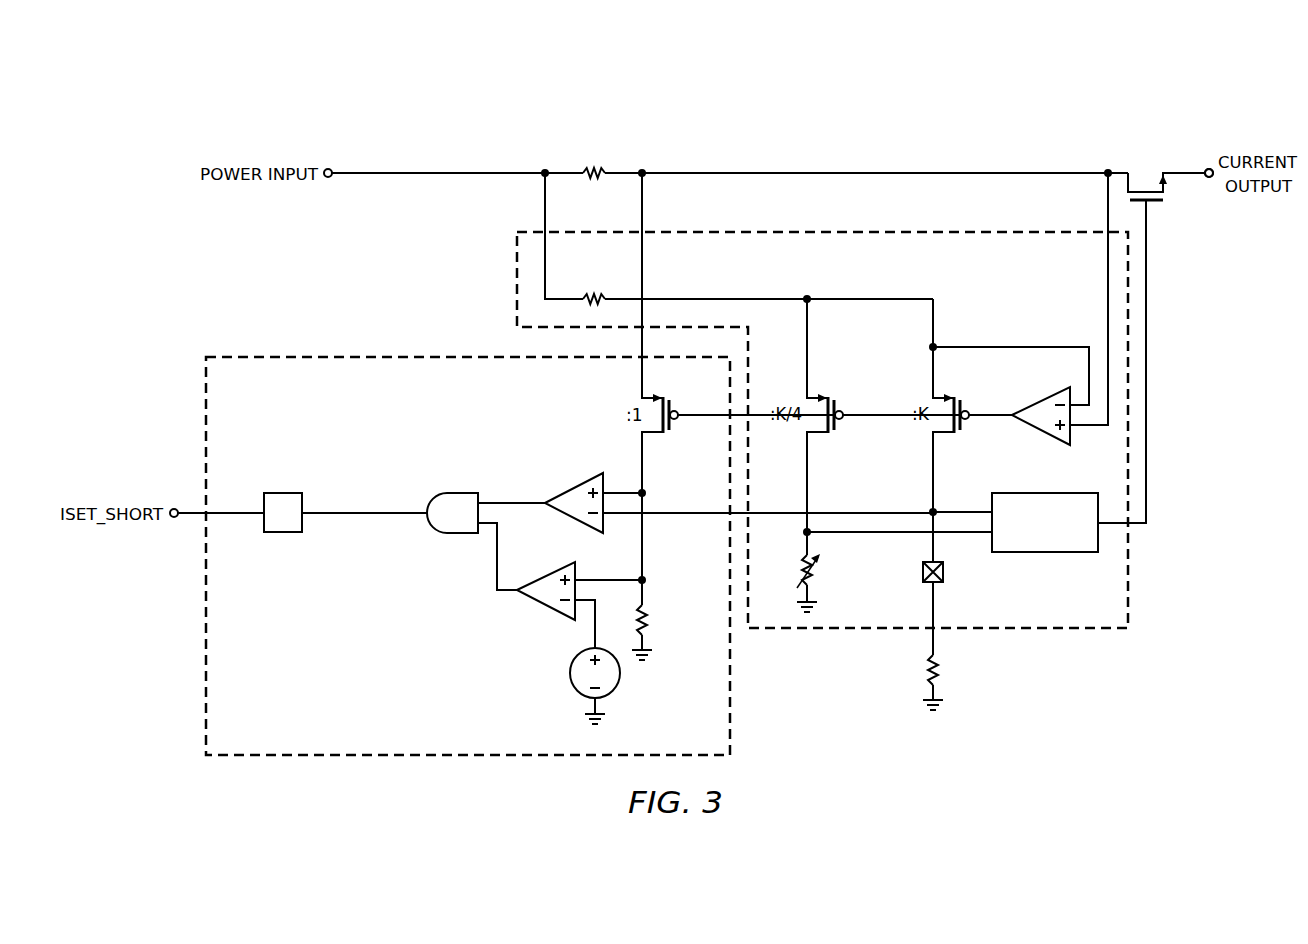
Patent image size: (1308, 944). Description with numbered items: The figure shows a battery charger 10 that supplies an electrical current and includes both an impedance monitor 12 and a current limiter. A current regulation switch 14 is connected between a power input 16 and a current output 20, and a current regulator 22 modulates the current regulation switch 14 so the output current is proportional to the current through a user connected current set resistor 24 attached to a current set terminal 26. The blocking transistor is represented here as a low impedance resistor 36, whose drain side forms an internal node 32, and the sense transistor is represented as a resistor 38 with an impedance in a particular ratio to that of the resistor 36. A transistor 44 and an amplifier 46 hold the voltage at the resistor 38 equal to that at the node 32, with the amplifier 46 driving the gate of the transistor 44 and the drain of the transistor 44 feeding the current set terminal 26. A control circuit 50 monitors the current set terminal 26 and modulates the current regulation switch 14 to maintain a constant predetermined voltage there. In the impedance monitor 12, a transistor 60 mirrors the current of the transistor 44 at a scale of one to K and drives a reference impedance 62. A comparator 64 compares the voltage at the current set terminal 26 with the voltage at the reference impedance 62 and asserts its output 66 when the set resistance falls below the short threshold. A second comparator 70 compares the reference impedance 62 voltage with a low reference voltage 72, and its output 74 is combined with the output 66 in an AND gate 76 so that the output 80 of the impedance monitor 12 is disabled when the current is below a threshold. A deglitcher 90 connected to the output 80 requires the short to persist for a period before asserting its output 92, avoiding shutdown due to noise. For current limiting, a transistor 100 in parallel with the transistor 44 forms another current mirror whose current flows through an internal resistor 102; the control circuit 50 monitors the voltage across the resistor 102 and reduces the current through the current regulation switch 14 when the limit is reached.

The battery charger 10 is at (1045, 104).
The impedance monitor 12 is at (380, 764).
The current regulation switch 14 is at (1155, 203).
The power input 16 is at (371, 171).
The current output 20 is at (1185, 170).
The current regulator 22 is at (1048, 640).
The current set resistor 24 is at (944, 672).
The current set terminal 26 is at (945, 577).
The internal node 32 is at (960, 170).
The resistor 36 is at (597, 166).
The resistor 38 is at (597, 292).
The transistor 44 is at (969, 402).
The amplifier 46 is at (1040, 436).
The control circuit 50 is at (1050, 553).
The transistor 60 is at (678, 402).
The reference impedance 62 is at (648, 622).
The comparator 64 is at (572, 486).
The output 66 is at (515, 500).
The comparator 70 is at (545, 610).
The reference voltage 72 is at (569, 675).
The output 74 is at (496, 557).
The AND gate 76 is at (458, 492).
The output 80 is at (370, 516).
The deglitcher 90 is at (268, 534).
The output 92 is at (243, 510).
The transistor 100 is at (843, 402).
The internal resistor 102 is at (812, 576).